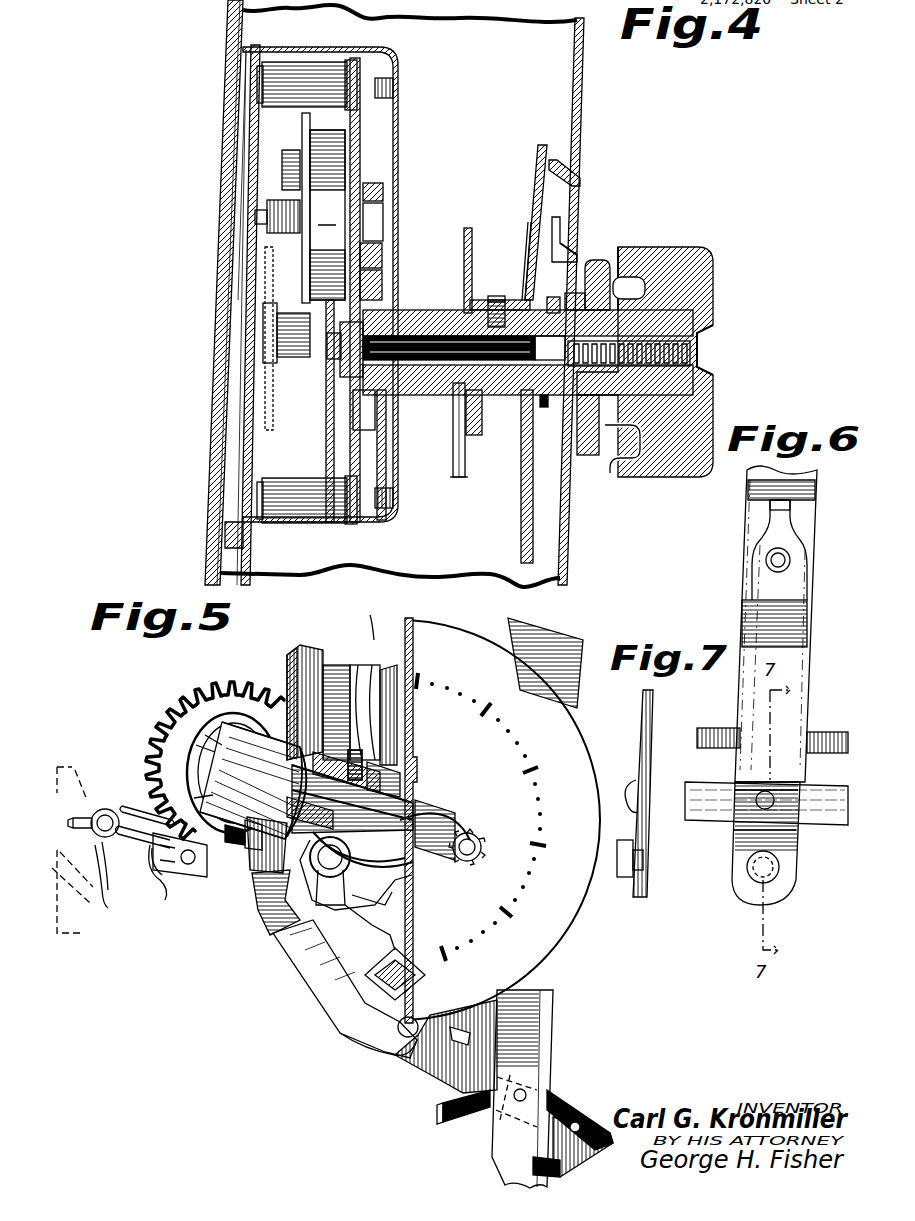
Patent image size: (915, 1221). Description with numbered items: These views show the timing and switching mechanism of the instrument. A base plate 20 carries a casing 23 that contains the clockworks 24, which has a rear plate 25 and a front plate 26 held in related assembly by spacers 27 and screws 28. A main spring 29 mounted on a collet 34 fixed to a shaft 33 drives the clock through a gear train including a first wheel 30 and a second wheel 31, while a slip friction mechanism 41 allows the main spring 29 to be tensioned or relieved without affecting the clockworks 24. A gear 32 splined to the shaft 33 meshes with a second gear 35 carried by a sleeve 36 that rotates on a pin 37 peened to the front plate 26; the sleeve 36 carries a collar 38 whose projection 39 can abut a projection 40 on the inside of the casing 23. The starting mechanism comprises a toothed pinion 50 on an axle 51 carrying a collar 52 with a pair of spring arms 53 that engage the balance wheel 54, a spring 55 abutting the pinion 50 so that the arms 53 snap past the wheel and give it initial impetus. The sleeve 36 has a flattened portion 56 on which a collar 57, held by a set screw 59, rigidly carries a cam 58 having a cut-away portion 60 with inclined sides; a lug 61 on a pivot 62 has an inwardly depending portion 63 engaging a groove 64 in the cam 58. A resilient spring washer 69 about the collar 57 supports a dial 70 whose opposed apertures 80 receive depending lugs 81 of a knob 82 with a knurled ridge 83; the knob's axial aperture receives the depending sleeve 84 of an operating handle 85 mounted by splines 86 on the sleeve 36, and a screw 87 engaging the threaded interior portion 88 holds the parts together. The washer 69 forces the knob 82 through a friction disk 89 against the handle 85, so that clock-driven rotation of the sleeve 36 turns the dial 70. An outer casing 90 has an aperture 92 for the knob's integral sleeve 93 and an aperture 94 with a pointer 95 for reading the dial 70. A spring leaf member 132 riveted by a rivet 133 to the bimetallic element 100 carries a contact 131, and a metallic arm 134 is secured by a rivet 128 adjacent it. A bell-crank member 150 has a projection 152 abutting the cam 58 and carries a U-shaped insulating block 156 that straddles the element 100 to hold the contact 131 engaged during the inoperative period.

In FIG. 4, the base plate 20 is at (232, 38).
In FIG. 4, the casing 23 is at (398, 62).
In FIG. 5, the casing 23 is at (305, 668).
In FIG. 4, the clockworks 24 is at (282, 420).
In FIG. 4, the rear plate 25 is at (253, 183).
In FIG. 4, the front plate 26 is at (362, 145).
In FIG. 4, the spacers 27 is at (305, 68).
In FIG. 4, the screws 28 is at (400, 88).
In FIG. 4, the main spring 29 is at (300, 120).
In FIG. 4, the first wheel 30 is at (320, 130).
In FIG. 4, the second wheel 31 is at (268, 372).
In FIG. 4, the gear 32 is at (385, 192).
In FIG. 4, the shaft 33 is at (384, 224).
In FIG. 4, the collet 34 is at (327, 215).
In FIG. 4, the second gear 35 is at (384, 270).
In FIG. 5, the second gear 35 is at (262, 716).
In FIG. 4, the sleeve 36 is at (462, 312).
In FIG. 5, the sleeve 36 is at (228, 716).
In FIG. 4, the pin 37 is at (440, 383).
In FIG. 4, the collar 38 is at (383, 290).
In FIG. 5, the collar 38 is at (180, 708).
In FIG. 4, the projection 39 is at (386, 450).
In FIG. 5, the projection 39 is at (240, 848).
In FIG. 4, the projection 40 is at (376, 422).
In FIG. 5, the projection 40 is at (258, 855).
In FIG. 4, the slip friction mechanism 41 is at (264, 196).
In FIG. 5, the toothed pinion 50 is at (200, 876).
In FIG. 5, the axle 51 is at (156, 828).
In FIG. 5, the collar 52 is at (108, 809).
In FIG. 5, the spring arms 53 is at (130, 806).
In FIG. 5, the balance wheel 54 is at (80, 766).
In FIG. 5, the spring 55 is at (168, 885).
In FIG. 4, the flattened portion 56 is at (573, 292).
In FIG. 5, the flattened portion 56 is at (356, 680).
In FIG. 4, the collar 57 is at (488, 300).
In FIG. 5, the collar 57 is at (376, 660).
In FIG. 4, the cam 58 is at (470, 230).
In FIG. 5, the cam 58 is at (340, 685).
In FIG. 4, the set screw 59 is at (496, 298).
In FIG. 5, the set screw 59 is at (360, 750).
In FIG. 4, the cut-away portion 60 is at (456, 478).
In FIG. 5, the cut-away portion 60 is at (284, 922).
In FIG. 4, the lug 61 is at (466, 470).
In FIG. 5, the lug 61 is at (345, 905).
In FIG. 4, the pivot 62 is at (480, 430).
In FIG. 5, the pivot 62 is at (372, 945).
In FIG. 5, the inwardly depending portion 63 is at (395, 900).
In FIG. 5, the groove 64 is at (405, 884).
In FIG. 4, the spring washer 69 is at (530, 260).
In FIG. 5, the spring washer 69 is at (388, 700).
In FIG. 4, the dial 70 is at (544, 146).
In FIG. 5, the dial 70 is at (580, 740).
In FIG. 4, the apertures 80 is at (548, 296).
In FIG. 5, the apertures 80 is at (412, 775).
In FIG. 4, the lugs 81 is at (570, 262).
In FIG. 4, the knob 82 is at (605, 270).
In FIG. 4, the knurled ridge 83 is at (628, 278).
In FIG. 4, the depending sleeve 84 is at (692, 318).
In FIG. 4, the operating handle 85 is at (708, 272).
In FIG. 4, the splines 86 is at (690, 386).
In FIG. 5, the splines 86 is at (462, 810).
In FIG. 4, the screw 87 is at (706, 350).
In FIG. 4, the threaded interior portion 88 is at (660, 408).
In FIG. 5, the threaded interior portion 88 is at (482, 840).
In FIG. 4, the friction disk 89 is at (650, 300).
In FIG. 4, the casing 90 is at (580, 104).
In FIG. 4, the aperture 92 is at (585, 440).
In FIG. 4, the sleeve 93 is at (610, 460).
In FIG. 4, the aperture 94 is at (566, 176).
In FIG. 4, the pointer 95 is at (560, 230).
In FIG. 5, the bimetallic element 100 is at (540, 1016).
In FIG. 6, the bimetallic element 100 is at (812, 512).
In FIG. 6, the rivet 128 is at (774, 800).
In FIG. 6, the contact 131 is at (788, 869).
In FIG. 7, the contact 131 is at (620, 860).
In FIG. 6, the spring leaf member 132 is at (808, 620).
In FIG. 7, the spring leaf member 132 is at (652, 800).
In FIG. 6, the rivet 133 is at (790, 562).
In FIG. 6, the metallic arm 134 is at (703, 812).
In FIG. 5, the bell-crank member 150 is at (366, 1030).
In FIG. 5, the projection 152 is at (295, 942).
In FIG. 5, the insulating block 156 is at (570, 1100).
In FIG. 6, the insulating block 156 is at (822, 732).